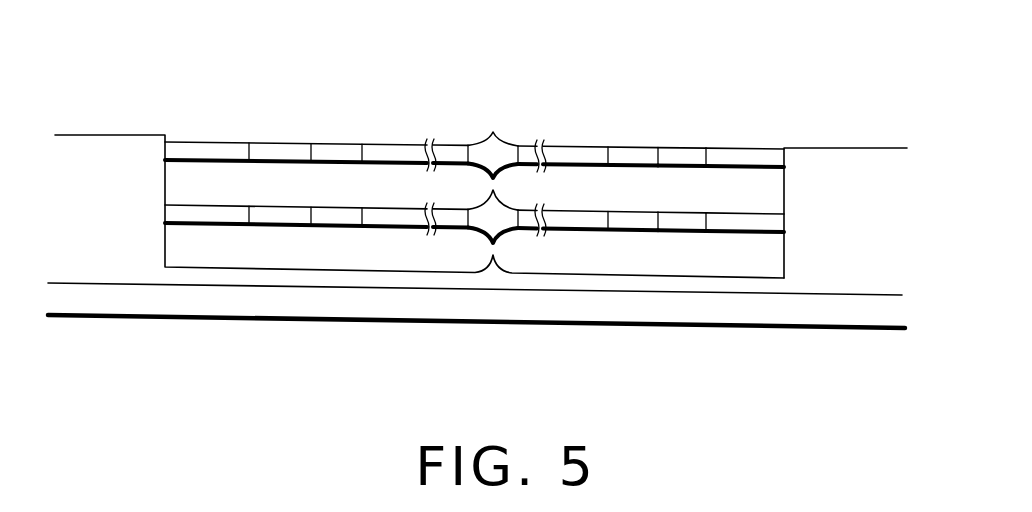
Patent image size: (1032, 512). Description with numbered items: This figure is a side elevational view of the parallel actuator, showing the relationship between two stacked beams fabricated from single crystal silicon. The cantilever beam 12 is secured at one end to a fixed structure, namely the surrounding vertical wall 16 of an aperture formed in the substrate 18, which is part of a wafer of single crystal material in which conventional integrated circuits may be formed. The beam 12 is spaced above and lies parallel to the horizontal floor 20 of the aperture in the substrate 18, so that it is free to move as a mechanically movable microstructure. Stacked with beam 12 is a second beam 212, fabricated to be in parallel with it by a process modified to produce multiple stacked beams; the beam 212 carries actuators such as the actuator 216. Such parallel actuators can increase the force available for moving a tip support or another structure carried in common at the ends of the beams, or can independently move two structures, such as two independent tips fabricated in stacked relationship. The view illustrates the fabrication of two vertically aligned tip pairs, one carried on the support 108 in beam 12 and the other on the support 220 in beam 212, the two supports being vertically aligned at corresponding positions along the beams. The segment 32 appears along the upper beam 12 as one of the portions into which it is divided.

The cantilever beam 12 is at (578, 152).
The vertical wall 16 is at (785, 180).
The substrate 18 is at (177, 298).
The horizontal floor 20 is at (367, 271).
The beam segment 32 is at (678, 148).
The support 108 is at (480, 148).
The beam 212 is at (563, 219).
The actuator 216 is at (678, 237).
The support 220 is at (500, 210).